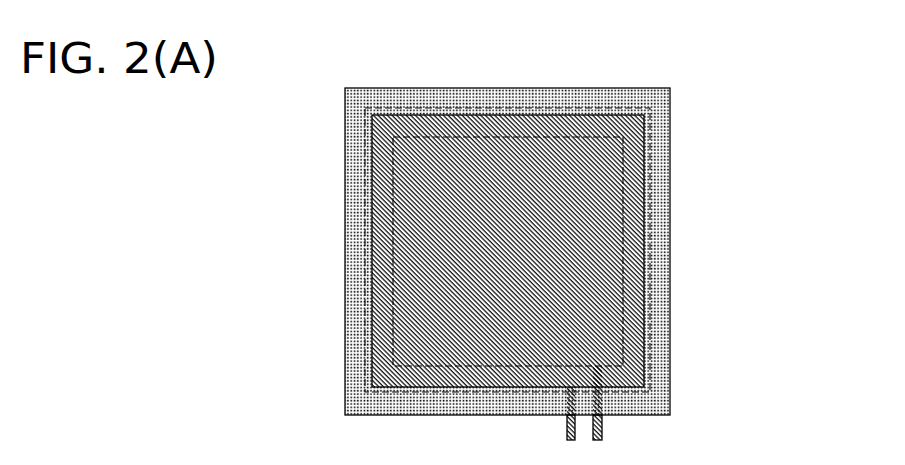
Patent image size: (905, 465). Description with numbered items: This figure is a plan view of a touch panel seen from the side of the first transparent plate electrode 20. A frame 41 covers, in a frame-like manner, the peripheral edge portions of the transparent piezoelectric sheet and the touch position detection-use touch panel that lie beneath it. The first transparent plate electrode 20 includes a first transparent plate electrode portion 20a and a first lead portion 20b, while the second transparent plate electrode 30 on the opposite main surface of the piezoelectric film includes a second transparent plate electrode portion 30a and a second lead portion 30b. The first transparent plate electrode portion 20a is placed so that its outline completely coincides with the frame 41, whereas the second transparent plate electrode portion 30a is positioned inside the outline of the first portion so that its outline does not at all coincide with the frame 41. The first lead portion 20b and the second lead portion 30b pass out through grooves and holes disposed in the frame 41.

The frame 41 is at (663, 123).
The second transparent plate electrode 30 is at (610, 260).
The second transparent plate electrode portion 30a is at (615, 357).
The second lead portion 30b is at (598, 383).
The first transparent plate electrode 20 is at (708, 415).
The first transparent plate electrode portion 20a is at (603, 390).
The first lead portion 20b is at (575, 442).